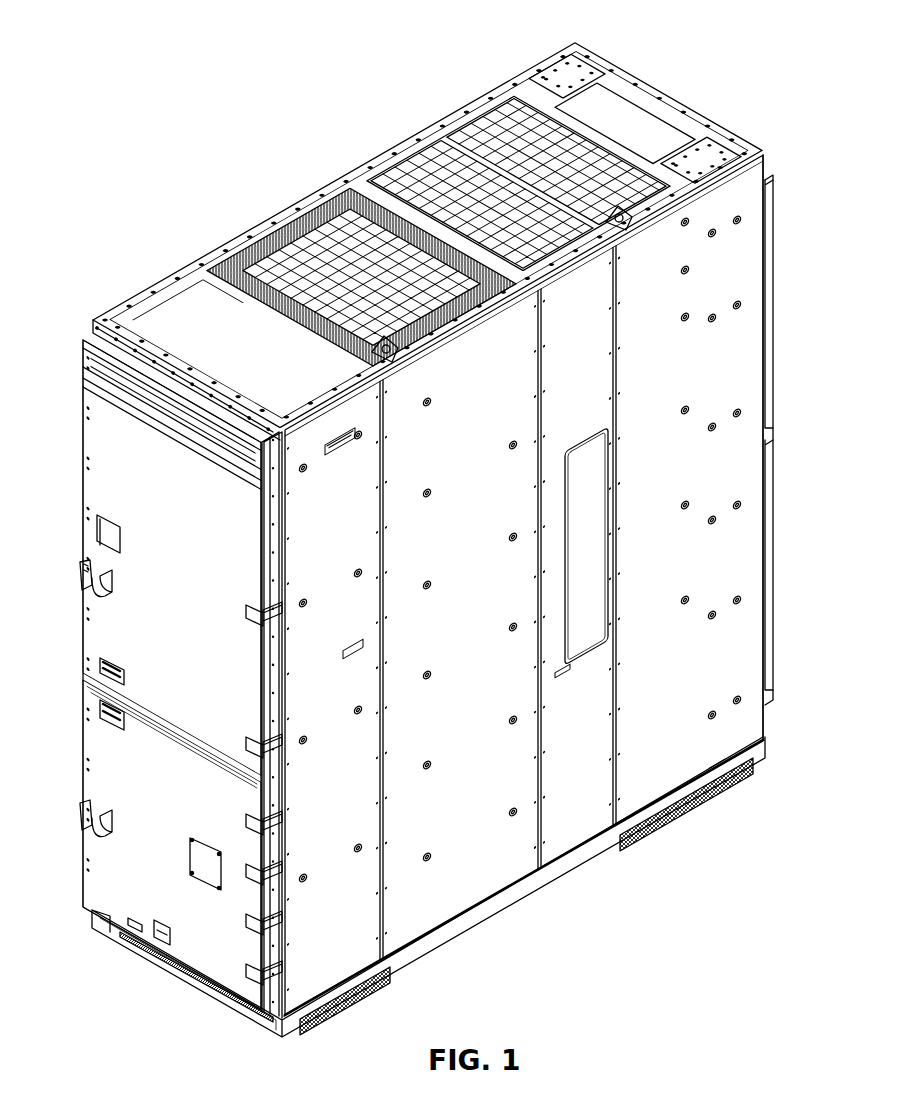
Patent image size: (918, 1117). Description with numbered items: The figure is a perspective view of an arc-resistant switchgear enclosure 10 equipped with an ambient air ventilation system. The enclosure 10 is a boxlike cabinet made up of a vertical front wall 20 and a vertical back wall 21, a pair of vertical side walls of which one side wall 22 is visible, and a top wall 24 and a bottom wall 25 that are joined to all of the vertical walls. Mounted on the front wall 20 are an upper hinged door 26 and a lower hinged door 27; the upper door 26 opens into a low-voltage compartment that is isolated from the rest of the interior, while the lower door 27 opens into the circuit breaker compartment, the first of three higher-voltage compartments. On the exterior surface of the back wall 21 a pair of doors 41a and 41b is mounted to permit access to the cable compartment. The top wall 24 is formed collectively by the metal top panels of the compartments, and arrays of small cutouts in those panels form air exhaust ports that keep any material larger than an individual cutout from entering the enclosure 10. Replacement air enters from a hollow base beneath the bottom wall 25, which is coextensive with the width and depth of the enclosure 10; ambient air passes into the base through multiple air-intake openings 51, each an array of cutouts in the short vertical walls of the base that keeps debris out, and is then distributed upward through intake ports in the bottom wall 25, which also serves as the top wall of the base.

The switchgear enclosure 10 is at (213, 47).
The front wall 20 is at (82, 456).
The back wall 21 is at (768, 437).
The side wall 22 is at (475, 654).
The top wall 24 is at (140, 293).
The bottom wall 25 is at (478, 908).
The upper hinged door 26 is at (198, 589).
The lower hinged door 27 is at (160, 834).
The door 41a is at (774, 234).
The door 41b is at (774, 545).
The air-intake openings 51 is at (193, 982).